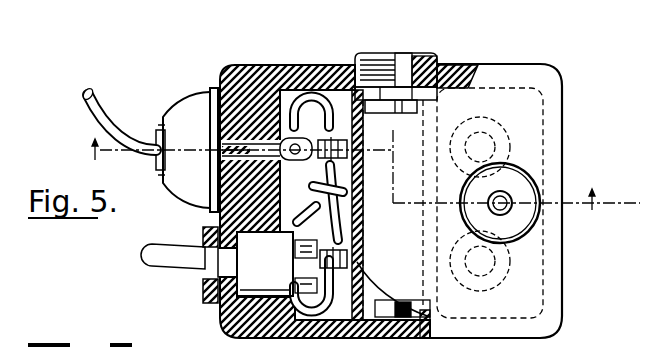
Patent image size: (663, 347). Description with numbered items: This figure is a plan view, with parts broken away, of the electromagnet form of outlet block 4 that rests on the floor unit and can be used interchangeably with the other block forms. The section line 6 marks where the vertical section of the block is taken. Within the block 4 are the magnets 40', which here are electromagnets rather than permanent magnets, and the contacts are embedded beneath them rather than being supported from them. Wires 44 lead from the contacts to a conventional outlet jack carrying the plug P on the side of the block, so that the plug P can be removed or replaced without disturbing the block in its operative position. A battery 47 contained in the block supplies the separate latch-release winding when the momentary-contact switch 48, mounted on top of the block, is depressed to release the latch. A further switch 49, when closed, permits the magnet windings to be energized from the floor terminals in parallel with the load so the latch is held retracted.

The outlet block 4 is at (276, 66).
The wires 44 is at (314, 95).
The battery 47 is at (362, 125).
The switch 48 is at (503, 208).
The magnets 40' is at (529, 204).
The switch 49 is at (217, 265).
The plug P is at (190, 106).
The section line 6— 6 is at (356, 170).